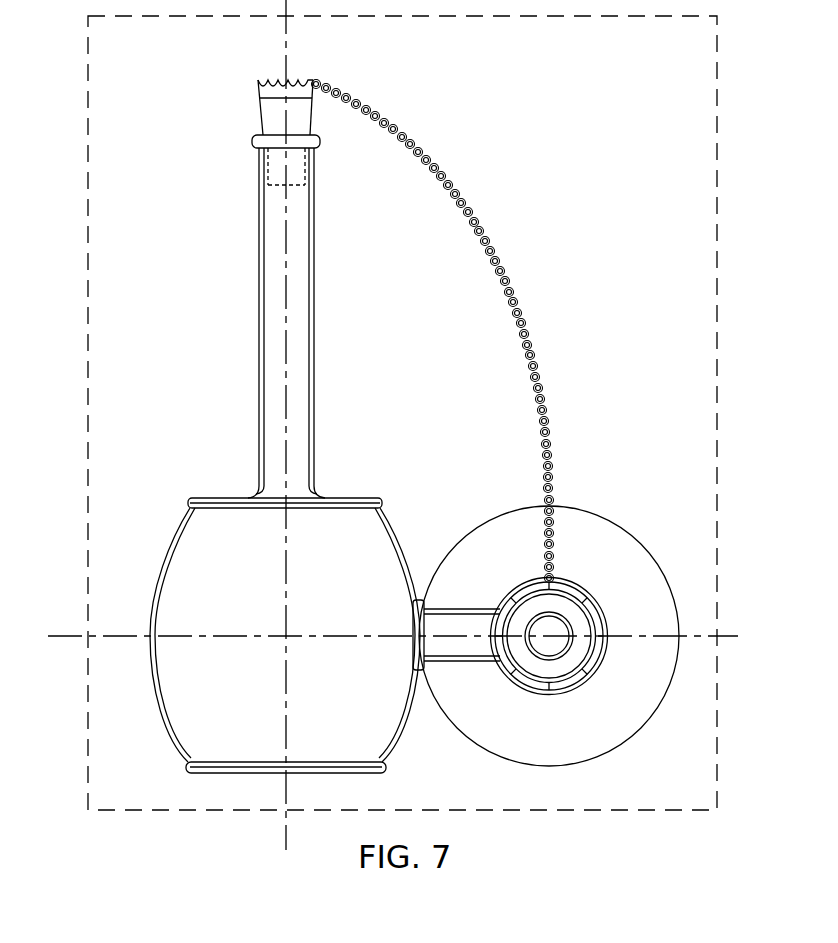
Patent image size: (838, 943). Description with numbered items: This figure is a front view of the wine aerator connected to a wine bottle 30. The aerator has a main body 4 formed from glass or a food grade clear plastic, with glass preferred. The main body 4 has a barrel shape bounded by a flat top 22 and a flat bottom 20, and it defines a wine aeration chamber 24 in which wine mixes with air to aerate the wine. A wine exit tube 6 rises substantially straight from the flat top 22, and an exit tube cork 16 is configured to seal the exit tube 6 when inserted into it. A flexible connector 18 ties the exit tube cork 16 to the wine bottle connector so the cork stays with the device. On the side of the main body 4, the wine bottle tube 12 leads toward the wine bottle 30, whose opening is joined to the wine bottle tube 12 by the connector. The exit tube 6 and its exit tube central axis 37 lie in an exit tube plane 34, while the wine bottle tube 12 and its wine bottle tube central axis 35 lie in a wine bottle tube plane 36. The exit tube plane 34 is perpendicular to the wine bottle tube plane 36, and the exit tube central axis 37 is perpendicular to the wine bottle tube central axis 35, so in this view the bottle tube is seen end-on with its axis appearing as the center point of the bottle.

The main body 4 is at (170, 520).
The wine exit tube 6 is at (260, 320).
The wine bottle tube 12 is at (462, 660).
The exit tube cork 16 is at (275, 113).
The flexible connector 18 is at (495, 238).
The flat bottom 20 is at (222, 773).
The flat top 22 is at (350, 495).
The wine aeration chamber 24 is at (248, 555).
The wine bottle 30 is at (650, 548).
The exit tube plane 34 is at (717, 60).
The wine bottle tube central axis 35 is at (553, 641).
The wine bottle tube plane 36 is at (70, 640).
The exit tube central axis 37 is at (286, 47).